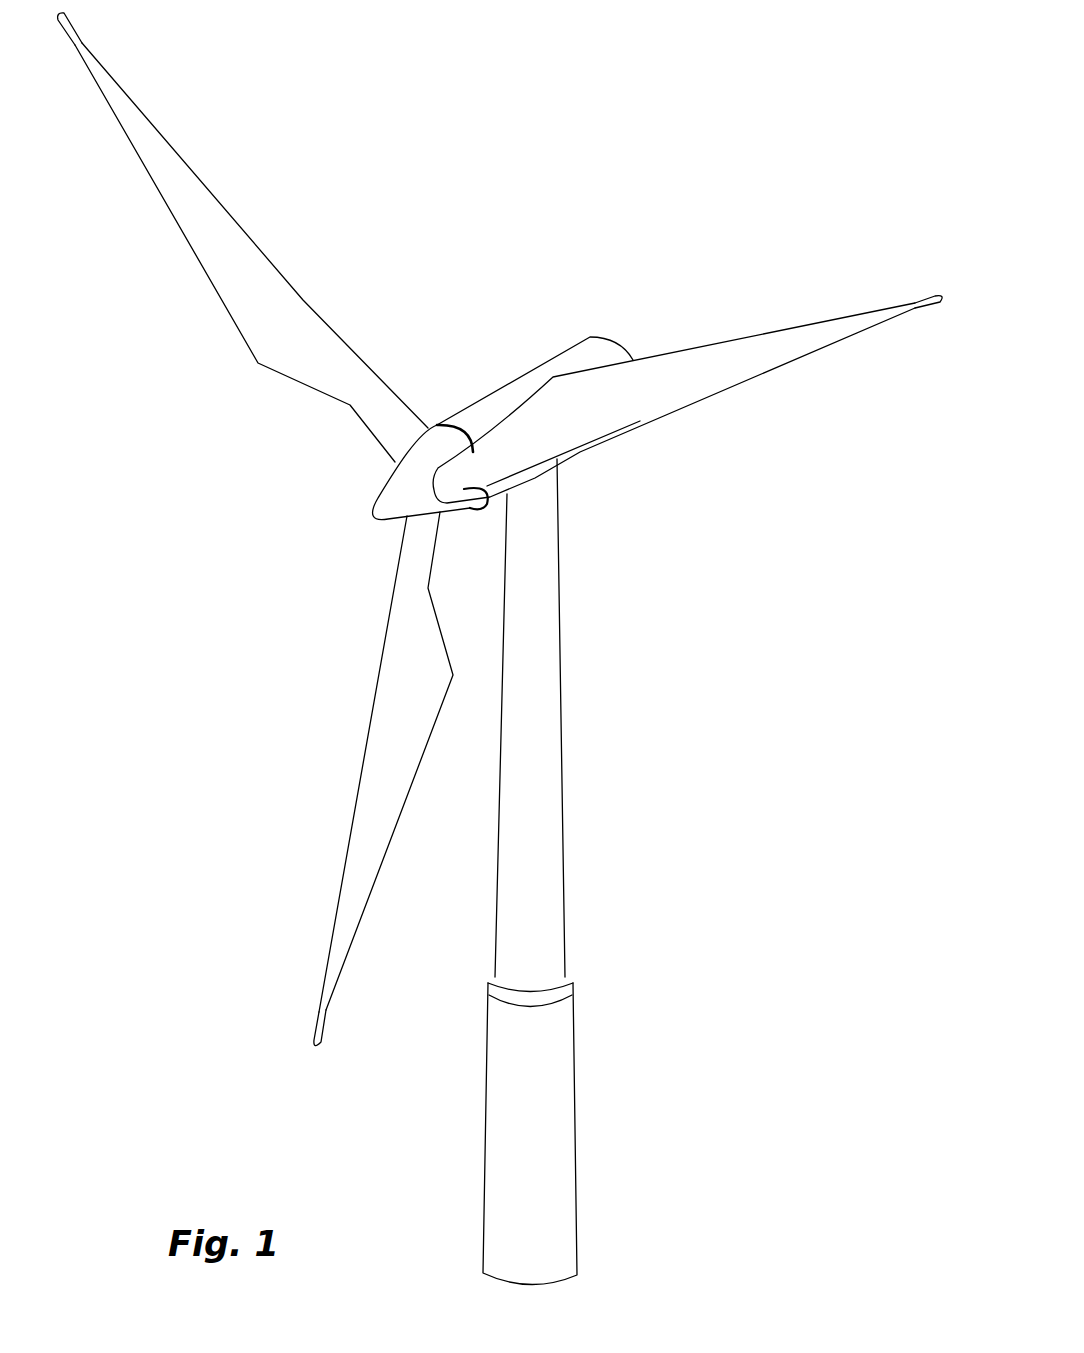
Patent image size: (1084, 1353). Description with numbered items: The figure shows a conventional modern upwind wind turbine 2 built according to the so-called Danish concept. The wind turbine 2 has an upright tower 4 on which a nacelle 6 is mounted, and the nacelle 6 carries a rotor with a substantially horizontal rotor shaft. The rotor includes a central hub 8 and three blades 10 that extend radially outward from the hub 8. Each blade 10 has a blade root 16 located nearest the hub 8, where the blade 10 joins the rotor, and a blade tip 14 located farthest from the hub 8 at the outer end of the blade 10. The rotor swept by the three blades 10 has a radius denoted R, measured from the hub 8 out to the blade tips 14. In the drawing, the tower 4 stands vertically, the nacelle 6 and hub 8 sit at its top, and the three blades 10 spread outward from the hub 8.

The wind turbine 2 is at (672, 808).
The tower 4 is at (550, 725).
The nacelle 6 is at (493, 403).
The hub 8 is at (393, 497).
The blade 10 is at (273, 333).
The blade tip 14 is at (105, 76).
The blade root 16 is at (400, 447).